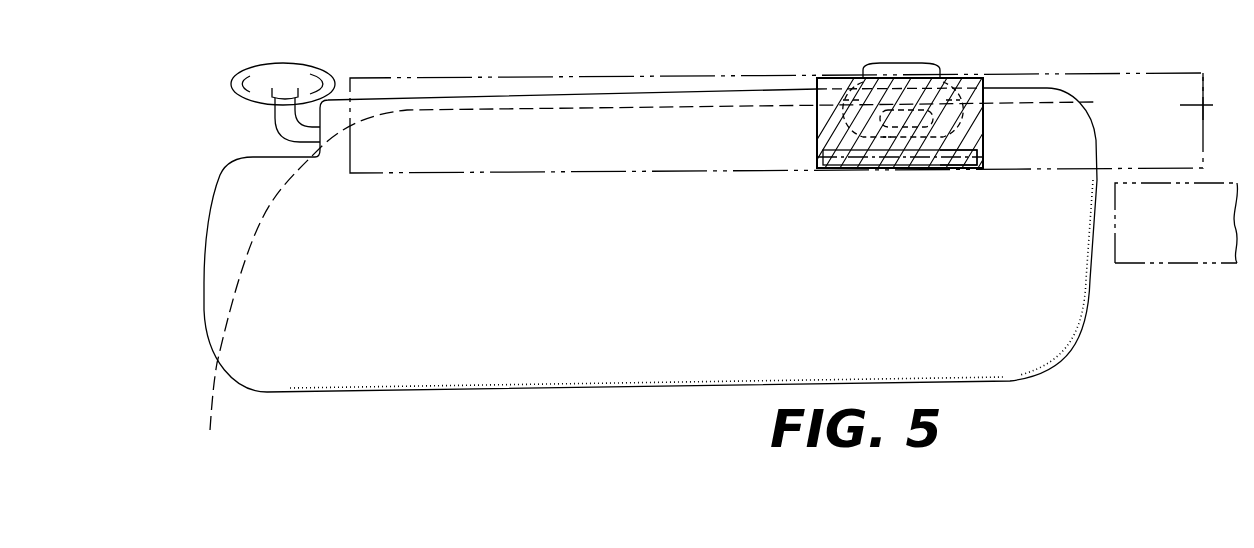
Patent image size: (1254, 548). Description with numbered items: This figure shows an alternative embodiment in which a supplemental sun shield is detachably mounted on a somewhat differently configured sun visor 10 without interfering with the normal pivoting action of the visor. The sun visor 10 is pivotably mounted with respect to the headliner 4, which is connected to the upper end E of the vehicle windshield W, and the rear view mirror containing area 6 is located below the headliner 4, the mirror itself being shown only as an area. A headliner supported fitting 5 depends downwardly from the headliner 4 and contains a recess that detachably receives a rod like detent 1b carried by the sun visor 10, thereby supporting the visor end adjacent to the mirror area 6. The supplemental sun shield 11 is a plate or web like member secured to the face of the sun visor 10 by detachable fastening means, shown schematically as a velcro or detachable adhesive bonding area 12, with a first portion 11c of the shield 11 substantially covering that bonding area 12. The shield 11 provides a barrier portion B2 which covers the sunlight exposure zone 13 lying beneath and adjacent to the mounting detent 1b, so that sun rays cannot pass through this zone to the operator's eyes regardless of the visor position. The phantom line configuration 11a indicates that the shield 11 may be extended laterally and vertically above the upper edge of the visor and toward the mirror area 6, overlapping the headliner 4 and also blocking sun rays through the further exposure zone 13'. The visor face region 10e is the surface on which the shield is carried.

The sun visor 10 is at (1037, 338).
The visor front face 10e is at (568, 304).
The vehicle windshield W is at (578, 427).
The sunlight exposure zone 13 is at (597, 86).
The exposure zone 13' is at (1101, 70).
The headliner supported fitting 5 is at (899, 63).
The rod like detent 1b is at (908, 98).
The phantom line configuration 11a is at (438, 78).
The supplemental sun shield 11 is at (972, 72).
The detachable adhesive bonding area 12 is at (843, 168).
The first portion of the sun shield 11c is at (947, 168).
The barrier portion B2 is at (888, 136).
The headliner 4 is at (1185, 55).
The upper end E is at (1193, 105).
The rear view mirror containing area 6 is at (1200, 235).